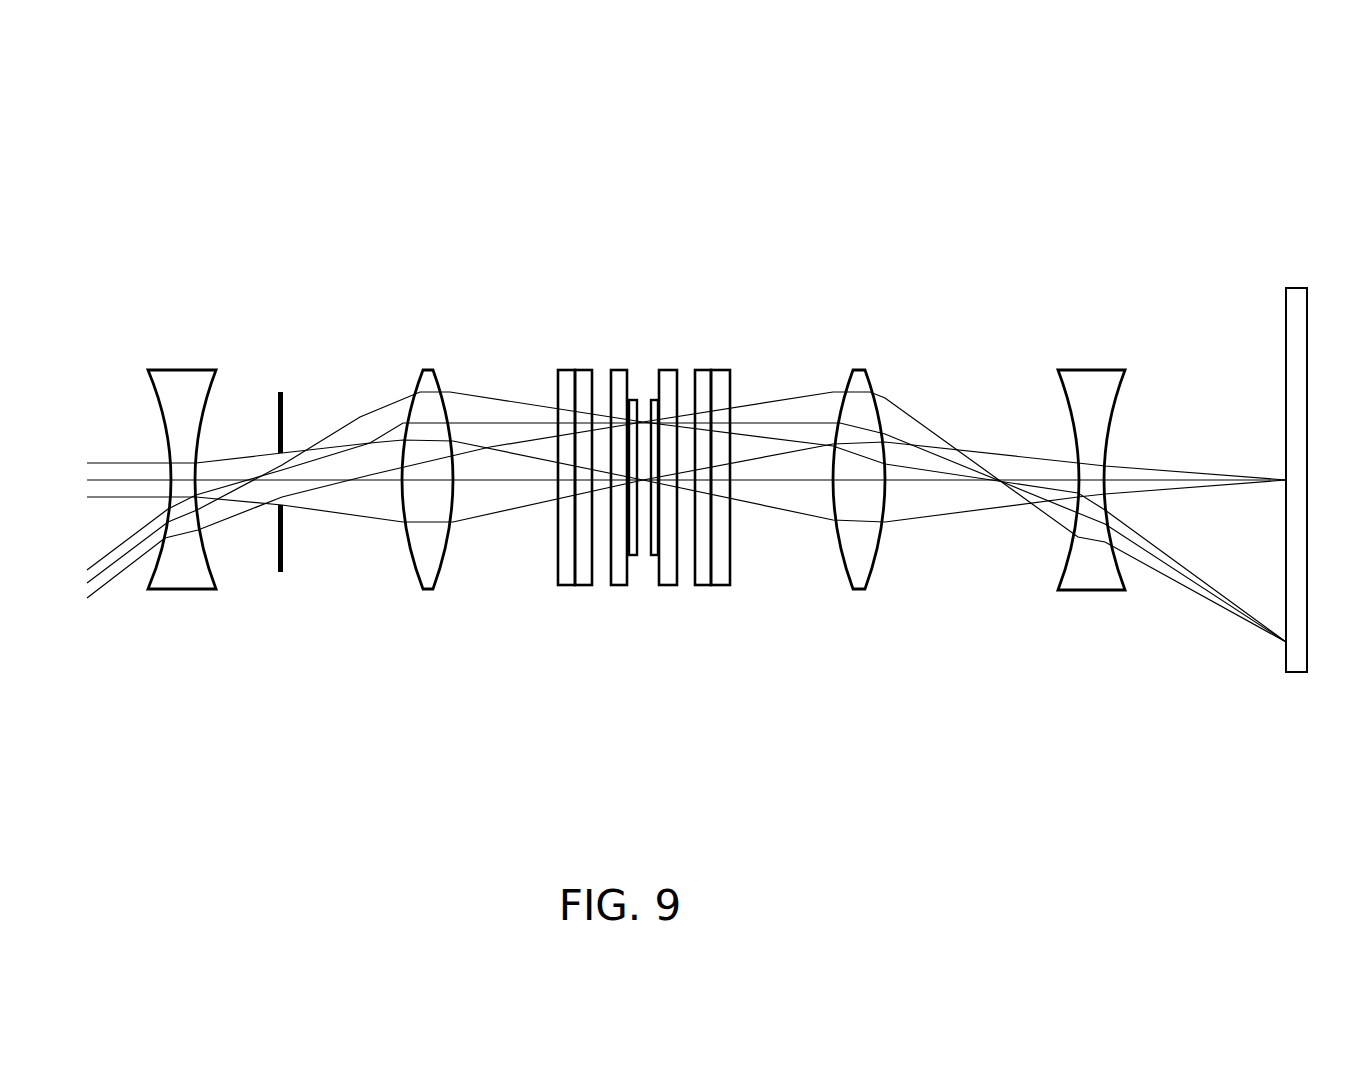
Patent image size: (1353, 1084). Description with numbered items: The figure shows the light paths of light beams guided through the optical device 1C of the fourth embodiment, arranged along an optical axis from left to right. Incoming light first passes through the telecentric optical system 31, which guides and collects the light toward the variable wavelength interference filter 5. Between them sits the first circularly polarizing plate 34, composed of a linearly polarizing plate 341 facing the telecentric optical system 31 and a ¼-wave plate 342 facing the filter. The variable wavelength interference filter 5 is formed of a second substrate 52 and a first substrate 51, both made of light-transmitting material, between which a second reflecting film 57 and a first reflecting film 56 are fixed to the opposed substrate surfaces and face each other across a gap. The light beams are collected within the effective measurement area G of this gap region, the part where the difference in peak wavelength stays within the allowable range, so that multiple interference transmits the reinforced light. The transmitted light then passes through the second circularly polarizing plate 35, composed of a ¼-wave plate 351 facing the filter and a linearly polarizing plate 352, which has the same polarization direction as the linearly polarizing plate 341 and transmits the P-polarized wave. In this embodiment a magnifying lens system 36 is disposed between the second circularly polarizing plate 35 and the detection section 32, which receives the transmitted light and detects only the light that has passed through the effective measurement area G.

The optical device 1C is at (1023, 153).
The telecentric optical system 31 is at (145, 683).
The first circularly polarizing plate 34 is at (542, 550).
The linearly polarizing plate 341 is at (563, 586).
The ¼-wave plate 342 is at (585, 586).
The variable wavelength interference filter 5 is at (645, 492).
The second substrate 52 is at (623, 370).
The second reflecting film 57 is at (632, 557).
The first reflecting film 56 is at (650, 557).
The first substrate 51 is at (668, 370).
The effective measurement area G is at (644, 452).
The second circularly polarizing plate 35 is at (739, 550).
The ¼-wave plate 351 is at (700, 586).
The linearly polarizing plate 352 is at (720, 586).
The magnifying lens system 36 is at (845, 683).
The detection section 32 is at (1299, 673).